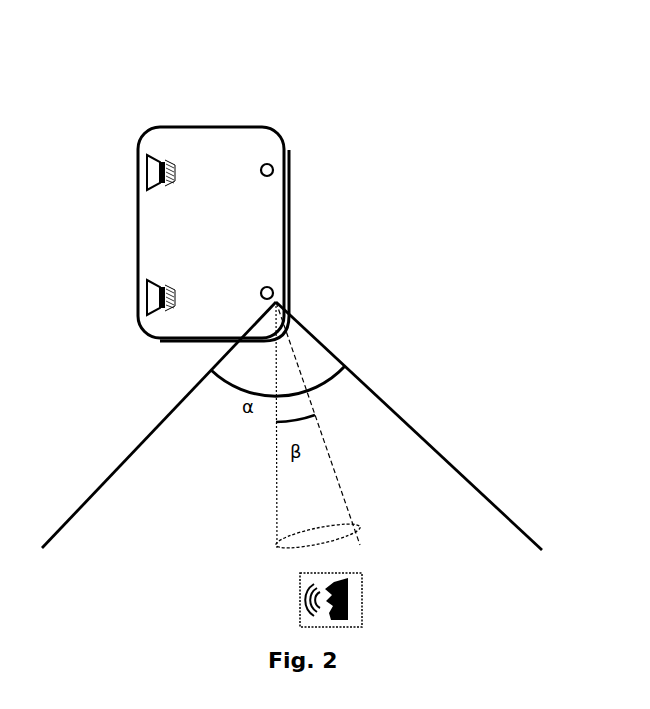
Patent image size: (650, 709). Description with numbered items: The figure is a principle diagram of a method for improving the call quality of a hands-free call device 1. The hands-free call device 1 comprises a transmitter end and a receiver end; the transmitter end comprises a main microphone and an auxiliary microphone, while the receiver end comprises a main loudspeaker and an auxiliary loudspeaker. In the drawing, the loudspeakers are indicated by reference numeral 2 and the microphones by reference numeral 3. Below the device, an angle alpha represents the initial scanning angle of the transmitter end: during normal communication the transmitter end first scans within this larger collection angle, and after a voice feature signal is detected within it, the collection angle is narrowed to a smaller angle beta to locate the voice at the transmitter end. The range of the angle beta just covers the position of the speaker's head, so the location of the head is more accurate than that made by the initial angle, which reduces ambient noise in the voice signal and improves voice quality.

The hands-free call device 1 is at (245, 185).
The speaker 2 is at (197, 190).
The microphone 3 is at (319, 199).